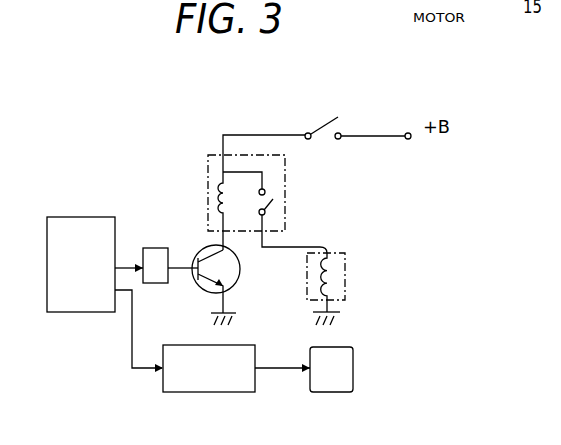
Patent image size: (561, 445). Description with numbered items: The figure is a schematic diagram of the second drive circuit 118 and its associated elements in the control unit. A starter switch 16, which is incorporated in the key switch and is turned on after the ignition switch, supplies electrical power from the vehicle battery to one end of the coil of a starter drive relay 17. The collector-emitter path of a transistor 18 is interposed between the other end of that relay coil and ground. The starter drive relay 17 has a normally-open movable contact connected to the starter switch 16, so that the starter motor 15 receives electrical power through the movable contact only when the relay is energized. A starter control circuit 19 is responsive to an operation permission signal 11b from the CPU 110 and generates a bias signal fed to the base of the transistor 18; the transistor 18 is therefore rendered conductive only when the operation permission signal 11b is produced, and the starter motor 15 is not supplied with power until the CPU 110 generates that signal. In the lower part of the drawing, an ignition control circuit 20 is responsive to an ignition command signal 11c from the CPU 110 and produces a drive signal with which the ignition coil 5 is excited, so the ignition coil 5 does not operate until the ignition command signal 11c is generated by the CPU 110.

The second drive circuit 118 is at (184, 128).
The starter switch 16 is at (323, 117).
The starter drive relay 17 is at (285, 182).
The starter motor 15 is at (345, 265).
The transistor 18 is at (197, 290).
The CPU 110 is at (65, 217).
The operation permission signal 11b is at (123, 263).
The starter control circuit 19 is at (160, 248).
The ignition command signal 11c is at (128, 355).
The ignition control circuit 20 is at (161, 390).
The ignition coil 5 is at (353, 380).